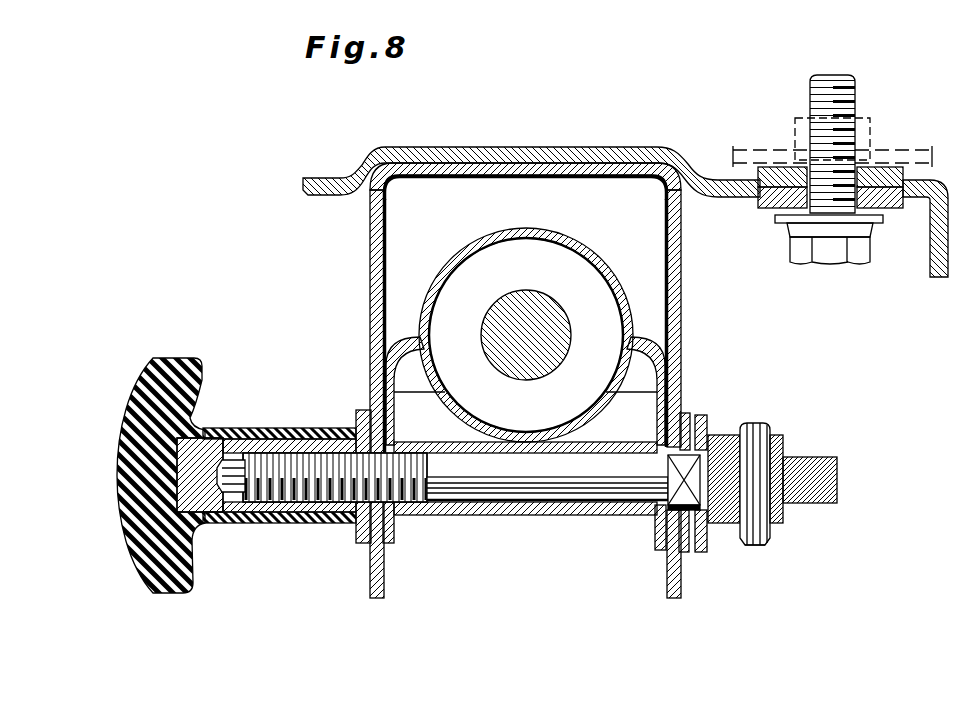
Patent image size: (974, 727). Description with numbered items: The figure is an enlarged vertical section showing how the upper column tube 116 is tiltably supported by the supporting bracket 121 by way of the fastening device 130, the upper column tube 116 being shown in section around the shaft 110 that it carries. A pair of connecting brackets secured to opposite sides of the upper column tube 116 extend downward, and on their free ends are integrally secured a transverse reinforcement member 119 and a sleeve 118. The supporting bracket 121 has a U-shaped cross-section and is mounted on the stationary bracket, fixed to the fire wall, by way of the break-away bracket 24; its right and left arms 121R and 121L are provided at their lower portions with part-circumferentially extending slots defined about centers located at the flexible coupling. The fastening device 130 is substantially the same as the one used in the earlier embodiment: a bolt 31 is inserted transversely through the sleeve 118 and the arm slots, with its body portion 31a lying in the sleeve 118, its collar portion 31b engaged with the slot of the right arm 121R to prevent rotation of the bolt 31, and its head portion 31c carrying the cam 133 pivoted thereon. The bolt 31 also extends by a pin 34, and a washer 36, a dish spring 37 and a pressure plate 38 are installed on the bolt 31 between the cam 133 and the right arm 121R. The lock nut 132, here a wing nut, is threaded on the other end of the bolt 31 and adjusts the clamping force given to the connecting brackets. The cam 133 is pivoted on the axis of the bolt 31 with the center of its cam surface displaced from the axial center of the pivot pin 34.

The break-away bracket 24 is at (670, 160).
The bolt 31 is at (828, 474).
The body portion 31a is at (453, 470).
The collar portion 31b is at (652, 476).
The head portion 31c is at (722, 497).
The pin 34 is at (750, 428).
The washer 36 is at (677, 527).
The dish spring 37 is at (696, 513).
The pressure plate 38 is at (702, 417).
The shaft 110 is at (500, 305).
The upper column tube 116 is at (597, 262).
The sleeve 118 is at (543, 507).
The transverse reinforcement member 119 is at (490, 518).
The supporting bracket 121 is at (454, 166).
The left arm 121L is at (376, 250).
The right arm 121R is at (678, 263).
The fastening device 130 is at (773, 542).
The lock nut 132 is at (184, 356).
The cam 133 is at (782, 448).